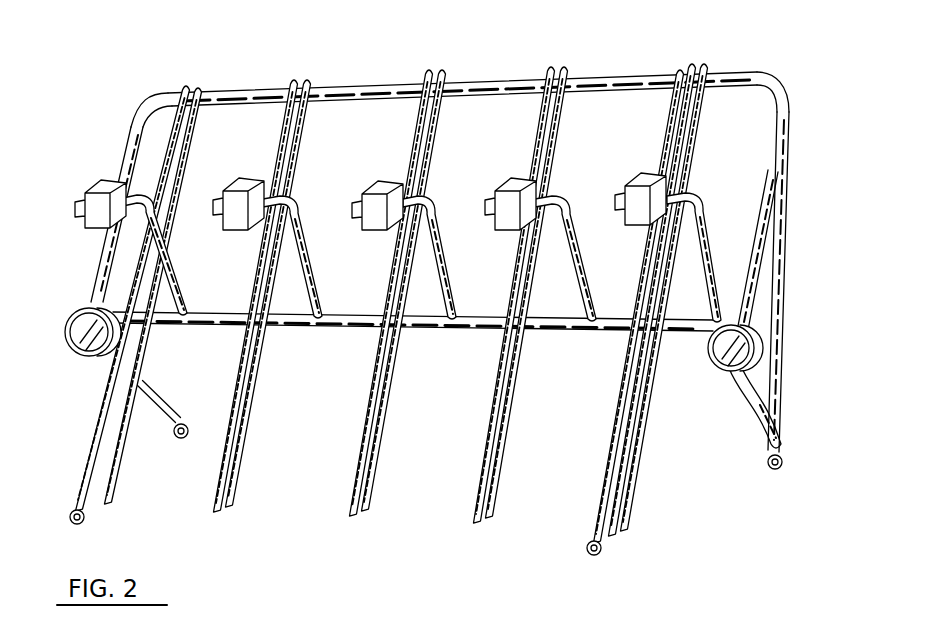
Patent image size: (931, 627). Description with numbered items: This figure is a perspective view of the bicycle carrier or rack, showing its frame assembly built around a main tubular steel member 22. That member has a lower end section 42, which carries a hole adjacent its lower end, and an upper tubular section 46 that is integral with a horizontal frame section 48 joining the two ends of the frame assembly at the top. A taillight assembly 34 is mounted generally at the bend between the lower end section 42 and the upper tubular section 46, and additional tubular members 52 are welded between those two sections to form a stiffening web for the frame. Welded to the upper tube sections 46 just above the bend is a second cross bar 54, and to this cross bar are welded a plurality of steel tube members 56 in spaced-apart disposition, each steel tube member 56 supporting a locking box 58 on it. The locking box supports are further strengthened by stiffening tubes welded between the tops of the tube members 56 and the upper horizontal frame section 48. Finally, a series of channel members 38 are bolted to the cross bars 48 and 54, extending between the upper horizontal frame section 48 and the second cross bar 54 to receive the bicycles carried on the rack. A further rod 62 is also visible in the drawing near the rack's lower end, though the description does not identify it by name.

The rack frame 22 is at (786, 126).
The caster wheel 34 is at (76, 346).
The support bar 38 is at (241, 427).
The lever arm 42 is at (757, 423).
The frame leg 46 is at (107, 259).
The top rail 48 is at (356, 84).
The upright member 52 is at (780, 341).
The lower rail 54 is at (333, 329).
The hook 56 is at (311, 288).
The clamp 58 is at (106, 182).
The leg rod 62 is at (614, 424).